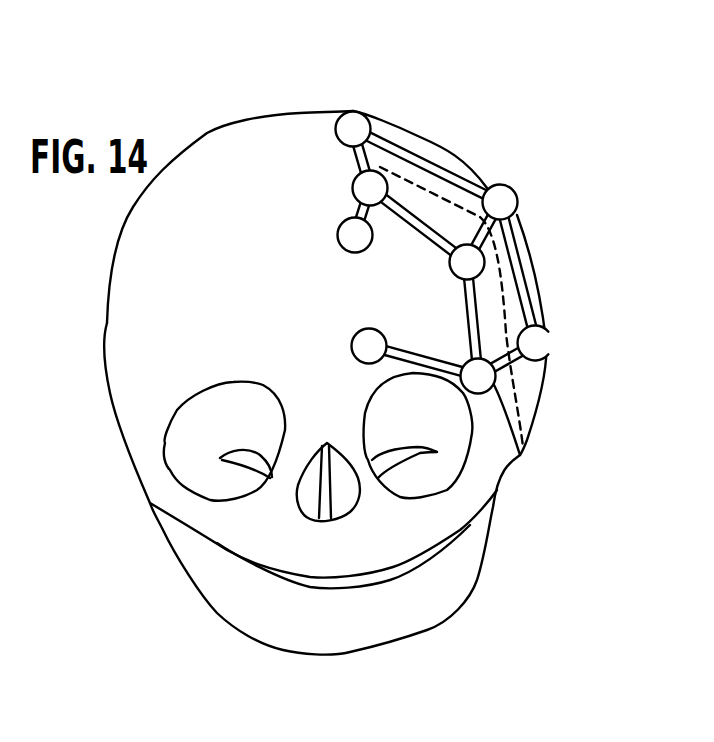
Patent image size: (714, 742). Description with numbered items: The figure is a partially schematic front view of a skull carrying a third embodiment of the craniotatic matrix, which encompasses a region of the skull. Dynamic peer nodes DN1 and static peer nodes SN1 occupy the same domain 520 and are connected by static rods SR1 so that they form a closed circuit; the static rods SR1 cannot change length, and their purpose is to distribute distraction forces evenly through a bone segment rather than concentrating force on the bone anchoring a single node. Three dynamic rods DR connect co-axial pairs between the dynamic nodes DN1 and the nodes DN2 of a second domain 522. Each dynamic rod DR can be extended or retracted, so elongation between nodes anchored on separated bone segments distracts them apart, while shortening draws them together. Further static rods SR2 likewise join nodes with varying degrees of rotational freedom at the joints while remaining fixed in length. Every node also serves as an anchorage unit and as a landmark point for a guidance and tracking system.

The domain 520 is at (458, 344).
The second domain 522 is at (420, 137).
The dynamic peer nodes DN1 is at (540, 460).
The nodes of the second domain DN2 is at (353, 129).
The static peer nodes SN1 is at (369, 346).
The static rods SR1 is at (387, 212).
The static rods SR2 is at (430, 168).
The dynamic rod mechanisms DR is at (358, 153).